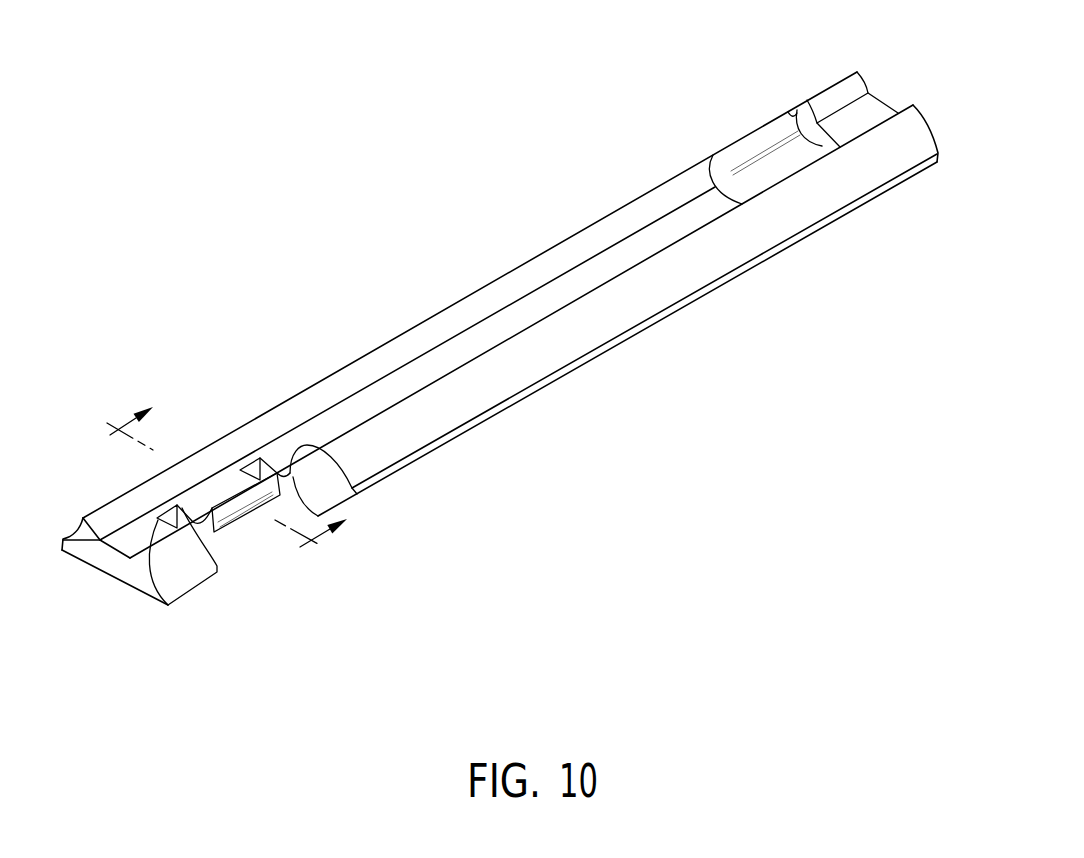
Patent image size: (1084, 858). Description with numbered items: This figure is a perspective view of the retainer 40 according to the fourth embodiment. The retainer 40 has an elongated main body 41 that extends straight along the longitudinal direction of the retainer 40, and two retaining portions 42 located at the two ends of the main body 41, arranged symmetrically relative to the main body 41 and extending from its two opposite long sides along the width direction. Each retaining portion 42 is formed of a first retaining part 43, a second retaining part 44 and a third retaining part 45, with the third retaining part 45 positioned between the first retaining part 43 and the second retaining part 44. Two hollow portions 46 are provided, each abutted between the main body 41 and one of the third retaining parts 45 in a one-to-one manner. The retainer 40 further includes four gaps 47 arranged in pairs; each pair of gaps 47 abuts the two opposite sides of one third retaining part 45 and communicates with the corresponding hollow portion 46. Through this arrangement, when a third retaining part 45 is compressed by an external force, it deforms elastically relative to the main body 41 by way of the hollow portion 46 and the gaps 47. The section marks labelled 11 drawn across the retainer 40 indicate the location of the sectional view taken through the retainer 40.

The retainer 40 is at (311, 185).
The main body 41 is at (130, 538).
The retaining portion 42 is at (419, 183).
The first retaining part 43 is at (180, 563).
The second retaining part 44 is at (467, 308).
The third retaining part 45 is at (747, 148).
The hollow portion 46 is at (238, 543).
The gap 47 is at (160, 521).
The section line 11 is at (223, 477).